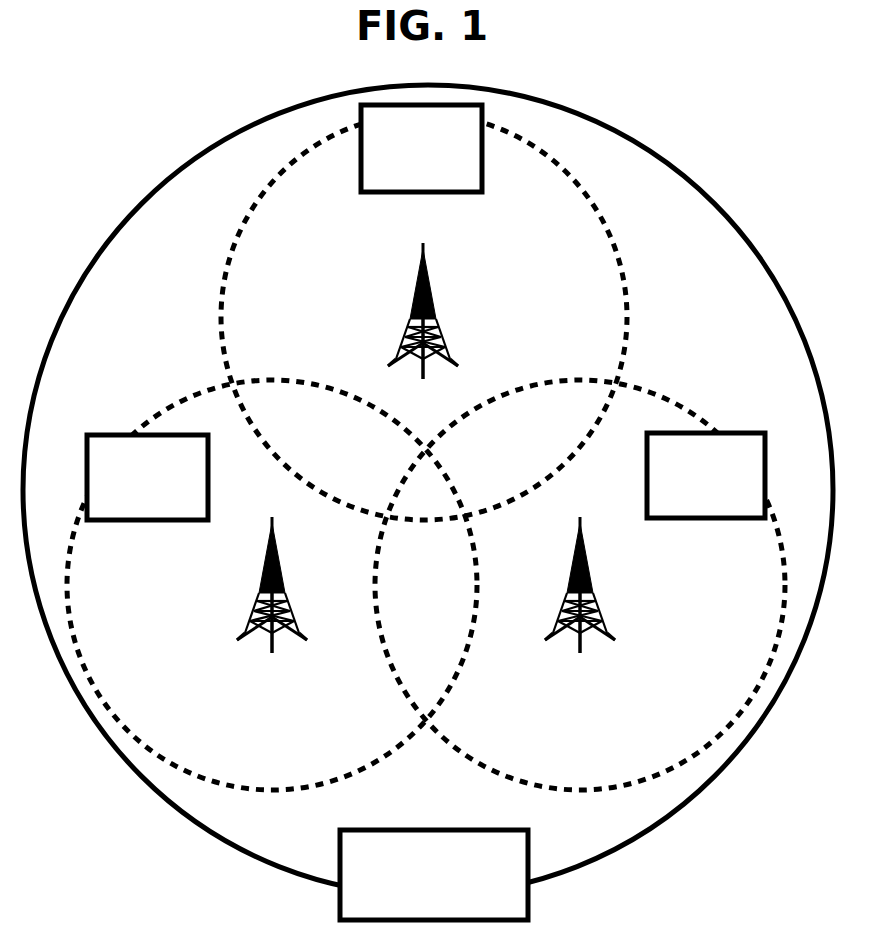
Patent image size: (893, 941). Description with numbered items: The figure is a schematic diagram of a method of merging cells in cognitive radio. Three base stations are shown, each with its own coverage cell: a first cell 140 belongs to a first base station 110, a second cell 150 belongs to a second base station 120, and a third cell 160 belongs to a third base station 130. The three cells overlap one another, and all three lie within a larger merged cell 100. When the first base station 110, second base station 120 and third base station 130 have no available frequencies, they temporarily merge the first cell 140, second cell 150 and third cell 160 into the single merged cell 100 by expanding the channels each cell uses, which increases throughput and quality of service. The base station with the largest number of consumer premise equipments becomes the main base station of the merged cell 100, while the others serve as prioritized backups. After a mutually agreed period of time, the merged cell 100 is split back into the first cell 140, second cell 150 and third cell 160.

The merged cell 100 is at (428, 502).
The first base station 110 is at (272, 621).
The second base station 120 is at (423, 348).
The third base station 130 is at (580, 621).
The first cell 140 is at (272, 585).
The second cell 150 is at (424, 312).
The third cell 160 is at (580, 585).